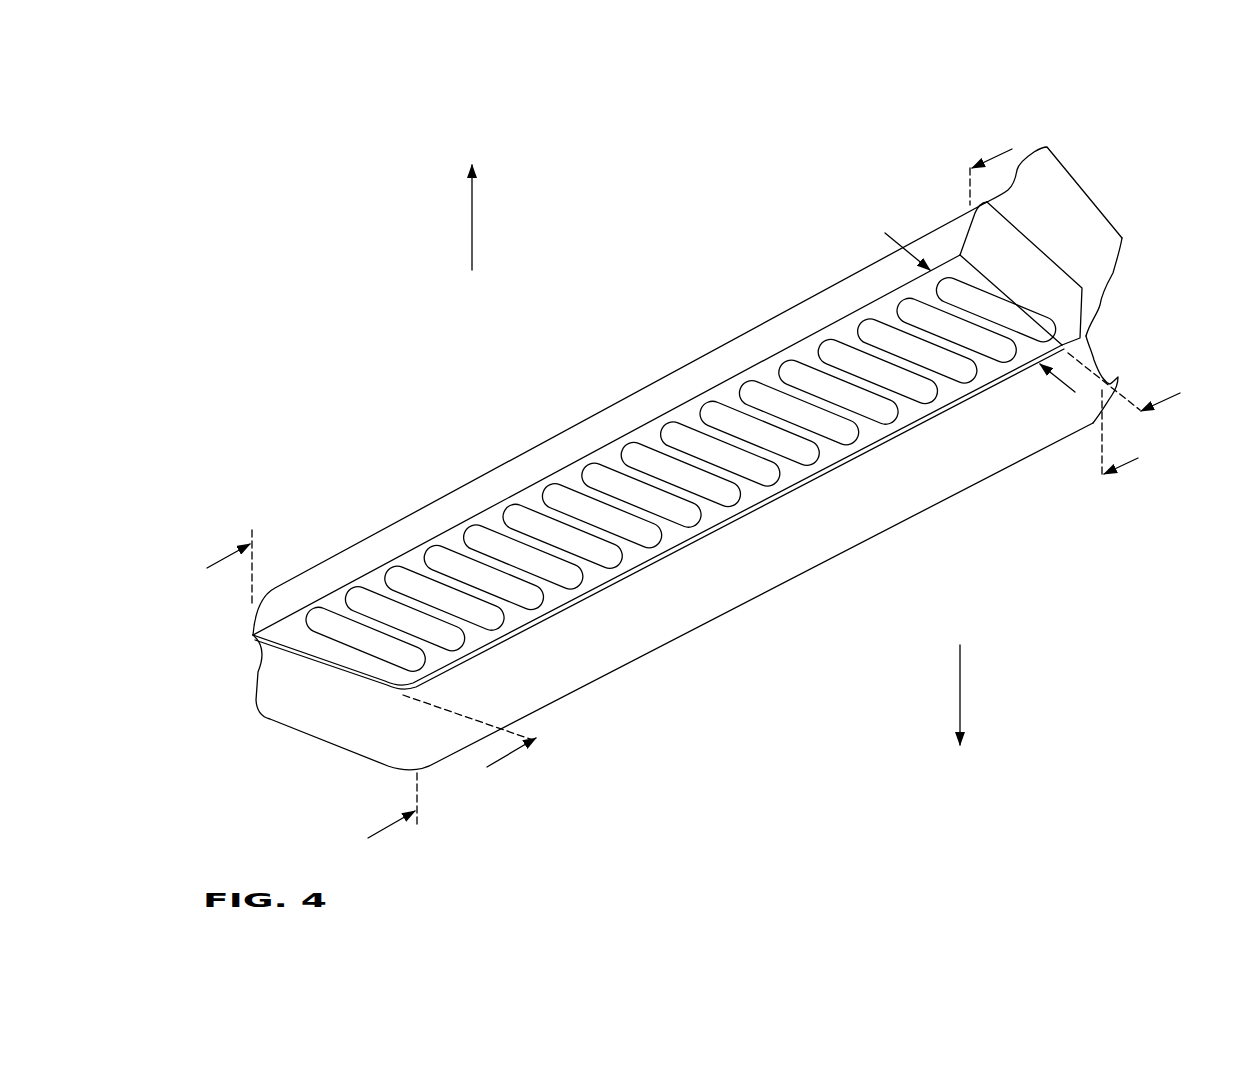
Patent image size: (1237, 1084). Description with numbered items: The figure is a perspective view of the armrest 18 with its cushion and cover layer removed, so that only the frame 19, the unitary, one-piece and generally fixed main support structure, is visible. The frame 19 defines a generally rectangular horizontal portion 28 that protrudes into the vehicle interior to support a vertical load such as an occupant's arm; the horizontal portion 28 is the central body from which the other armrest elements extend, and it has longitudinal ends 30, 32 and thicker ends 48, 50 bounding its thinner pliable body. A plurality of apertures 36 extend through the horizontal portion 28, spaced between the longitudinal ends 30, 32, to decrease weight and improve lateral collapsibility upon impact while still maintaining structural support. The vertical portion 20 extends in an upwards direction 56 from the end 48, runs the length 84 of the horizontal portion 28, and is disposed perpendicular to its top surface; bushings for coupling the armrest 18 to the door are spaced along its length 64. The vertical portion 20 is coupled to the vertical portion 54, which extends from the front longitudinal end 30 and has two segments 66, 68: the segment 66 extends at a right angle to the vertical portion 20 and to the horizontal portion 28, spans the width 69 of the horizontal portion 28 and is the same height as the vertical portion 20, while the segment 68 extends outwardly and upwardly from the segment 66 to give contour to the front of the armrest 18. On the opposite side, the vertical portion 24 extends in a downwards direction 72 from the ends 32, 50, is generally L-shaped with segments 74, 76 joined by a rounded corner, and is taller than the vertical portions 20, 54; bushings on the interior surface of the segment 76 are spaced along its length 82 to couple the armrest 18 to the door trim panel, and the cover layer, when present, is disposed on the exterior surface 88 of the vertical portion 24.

The armrest 18 is at (362, 182).
The frame 19 is at (335, 367).
The vertical portion 20 is at (272, 590).
The vertical portion 24 is at (605, 678).
The horizontal portion 28 is at (653, 443).
The longitudinal end 30 is at (1030, 316).
The longitudinal end 32 is at (317, 657).
The apertures 36 is at (410, 588).
The end 48 is at (550, 480).
The end 50 is at (710, 532).
The vertical portion 54 is at (1113, 275).
The upwards direction 56 is at (472, 218).
The length 64 is at (1000, 153).
The segment 66 is at (1080, 324).
The segment 68 is at (1125, 240).
The width 69 is at (1065, 387).
The downwards direction 72 is at (960, 680).
The segment 74 is at (340, 747).
The segment 76 is at (883, 528).
The length 82 is at (1130, 456).
The length 84 is at (517, 745).
The exterior surface 88 is at (655, 617).